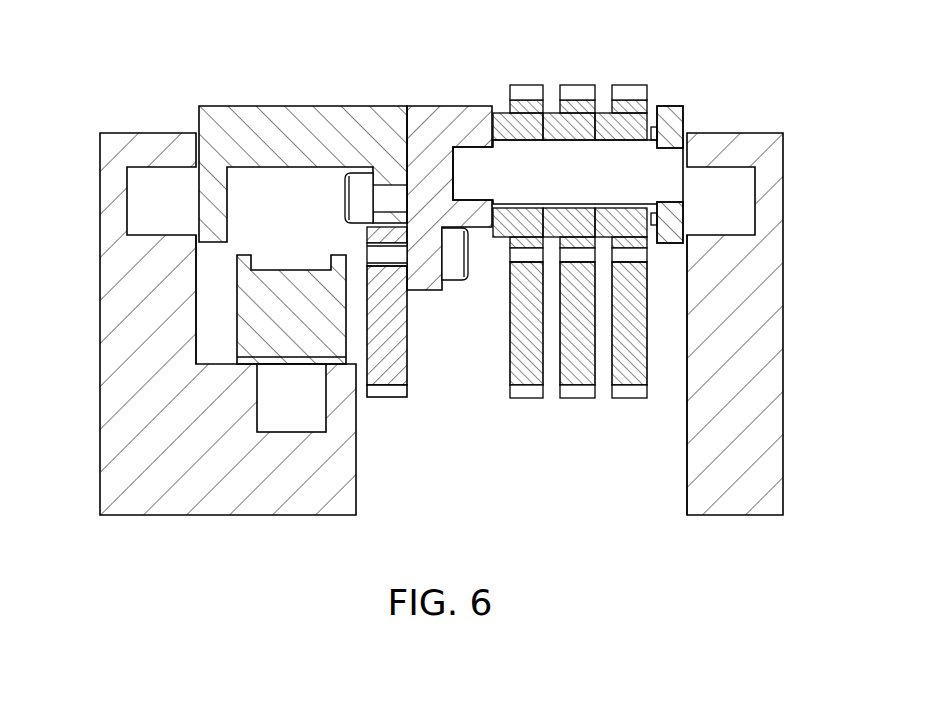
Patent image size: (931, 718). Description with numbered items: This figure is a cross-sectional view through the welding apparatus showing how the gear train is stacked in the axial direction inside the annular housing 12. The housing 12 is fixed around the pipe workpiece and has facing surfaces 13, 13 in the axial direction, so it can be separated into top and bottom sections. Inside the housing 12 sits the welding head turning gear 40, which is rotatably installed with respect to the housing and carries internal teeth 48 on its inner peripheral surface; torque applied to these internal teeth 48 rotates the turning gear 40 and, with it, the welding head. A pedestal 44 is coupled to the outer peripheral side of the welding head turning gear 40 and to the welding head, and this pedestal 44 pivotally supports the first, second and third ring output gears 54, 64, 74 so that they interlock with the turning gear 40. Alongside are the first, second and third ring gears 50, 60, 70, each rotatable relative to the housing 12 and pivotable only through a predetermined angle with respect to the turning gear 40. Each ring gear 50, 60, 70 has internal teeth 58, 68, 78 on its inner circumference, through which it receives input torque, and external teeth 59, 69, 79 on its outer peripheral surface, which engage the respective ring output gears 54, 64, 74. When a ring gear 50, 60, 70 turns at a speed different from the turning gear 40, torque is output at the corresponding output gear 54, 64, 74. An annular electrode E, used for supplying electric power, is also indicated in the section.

The housing 12 is at (104, 369).
The facing surfaces 13 is at (200, 312).
The welding head turning gear 40 is at (395, 355).
The pedestal 44 is at (447, 120).
The internal teeth 48 is at (385, 392).
The first ring gear 50 is at (513, 372).
The first ring output gear 54 is at (530, 100).
The internal teeth 58 is at (525, 393).
The external teeth 59 is at (523, 257).
The second ring gear 60 is at (572, 380).
The second ring output gear 64 is at (583, 100).
The internal teeth 68 is at (587, 393).
The external teeth 69 is at (573, 258).
The third ring gear 70 is at (617, 380).
The third ring output gear 74 is at (638, 100).
The internal teeth 78 is at (635, 393).
The external teeth 79 is at (630, 258).
The annular electrode E is at (275, 282).